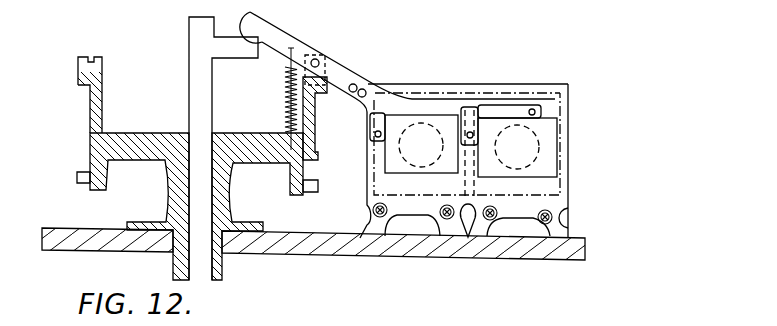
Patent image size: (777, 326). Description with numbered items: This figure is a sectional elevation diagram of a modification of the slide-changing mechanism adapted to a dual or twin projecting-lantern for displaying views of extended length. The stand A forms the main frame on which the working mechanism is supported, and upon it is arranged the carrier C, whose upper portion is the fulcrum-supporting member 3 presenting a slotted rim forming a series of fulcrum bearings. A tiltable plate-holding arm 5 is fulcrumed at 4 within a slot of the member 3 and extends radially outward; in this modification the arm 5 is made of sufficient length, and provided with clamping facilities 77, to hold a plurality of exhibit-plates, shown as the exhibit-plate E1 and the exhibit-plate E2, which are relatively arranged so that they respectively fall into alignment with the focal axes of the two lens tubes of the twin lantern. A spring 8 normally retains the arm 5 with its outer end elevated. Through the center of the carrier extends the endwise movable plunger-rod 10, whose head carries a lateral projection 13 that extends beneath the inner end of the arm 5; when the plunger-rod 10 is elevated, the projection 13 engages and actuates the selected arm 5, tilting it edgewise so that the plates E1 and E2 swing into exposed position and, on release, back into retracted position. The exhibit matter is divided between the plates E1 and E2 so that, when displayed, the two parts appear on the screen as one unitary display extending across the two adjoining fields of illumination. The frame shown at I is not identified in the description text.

The plunger-rod 10 is at (200, 98).
The lateral projection 13 is at (233, 48).
The spring 8 is at (286, 98).
The fulcrum 4 is at (317, 58).
The plate-holding arm 5 is at (338, 76).
The fulcrum-supporting member 3 is at (315, 102).
The clamping facilities 77 is at (420, 107).
The exhibit-plate E1 is at (443, 130).
The exhibit-plate E2 is at (545, 133).
The frame I is at (372, 180).
The stand A is at (313, 243).
The carrier C is at (117, 146).